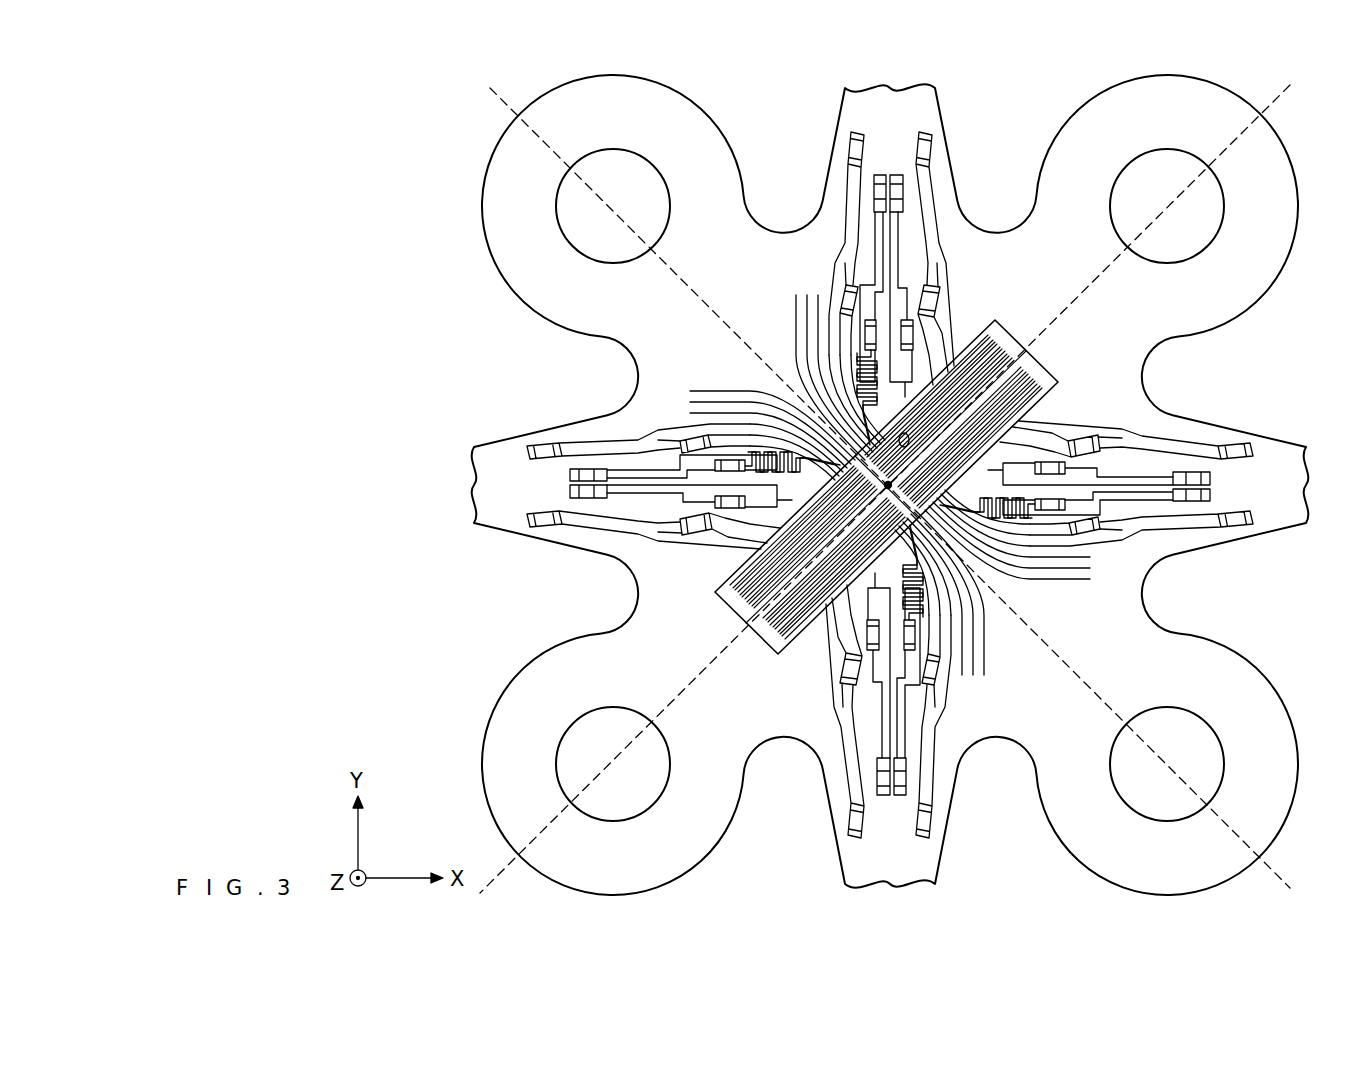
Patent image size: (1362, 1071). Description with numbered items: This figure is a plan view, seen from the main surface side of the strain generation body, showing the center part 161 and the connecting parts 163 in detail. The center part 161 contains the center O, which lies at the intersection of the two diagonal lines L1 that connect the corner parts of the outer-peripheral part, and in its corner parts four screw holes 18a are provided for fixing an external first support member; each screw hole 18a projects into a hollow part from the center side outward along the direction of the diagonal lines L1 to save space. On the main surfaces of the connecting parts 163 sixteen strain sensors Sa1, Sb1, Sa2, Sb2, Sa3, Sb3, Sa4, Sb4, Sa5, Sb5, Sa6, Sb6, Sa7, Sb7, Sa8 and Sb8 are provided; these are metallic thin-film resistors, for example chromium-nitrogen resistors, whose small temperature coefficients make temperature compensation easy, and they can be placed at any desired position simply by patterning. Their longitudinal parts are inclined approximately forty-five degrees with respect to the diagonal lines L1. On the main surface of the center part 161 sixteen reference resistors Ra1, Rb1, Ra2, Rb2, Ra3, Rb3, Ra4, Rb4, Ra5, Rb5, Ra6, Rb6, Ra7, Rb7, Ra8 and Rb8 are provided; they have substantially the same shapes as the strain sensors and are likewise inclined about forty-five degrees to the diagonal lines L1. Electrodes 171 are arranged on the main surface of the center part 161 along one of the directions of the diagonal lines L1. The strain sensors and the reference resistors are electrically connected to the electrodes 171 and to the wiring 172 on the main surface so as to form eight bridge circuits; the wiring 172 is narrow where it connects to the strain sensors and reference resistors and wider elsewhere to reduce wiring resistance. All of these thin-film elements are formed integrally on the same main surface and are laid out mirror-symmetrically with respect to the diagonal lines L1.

The center part 161 is at (1045, 297).
The connecting parts 163 is at (846, 108).
The electrodes 171 is at (720, 610).
The wiring 172 is at (1140, 432).
The screw hole 18a is at (572, 212).
The diagonal line L1 is at (1276, 104).
The strain sensor Sa1 is at (1250, 445).
The strain sensor Sa2 is at (1252, 527).
The strain sensor Sa3 is at (935, 822).
The strain sensor Sa4 is at (848, 820).
The strain sensor Sa5 is at (542, 525).
The strain sensor Sa6 is at (542, 450).
The strain sensor Sa7 is at (847, 150).
The strain sensor Sa8 is at (932, 140).
The strain sensor Sb1 is at (1212, 479).
The strain sensor Sb2 is at (1212, 497).
The strain sensor Sb3 is at (900, 798).
The strain sensor Sb4 is at (883, 798).
The strain sensor Sb5 is at (567, 492).
The strain sensor Sb6 is at (567, 480).
The strain sensor Sb7 is at (881, 174).
The strain sensor Sb8 is at (897, 174).
The reference resistor Ra1 is at (1088, 443).
The reference resistor Ra2 is at (1084, 536).
The reference resistor Ra3 is at (938, 668).
The reference resistor Ra4 is at (848, 672).
The reference resistor Ra5 is at (693, 530).
The reference resistor Ra6 is at (696, 436).
The reference resistor Ra7 is at (846, 300).
The reference resistor Ra8 is at (930, 305).
The reference resistor Rb1 is at (1052, 465).
The reference resistor Rb2 is at (1050, 512).
The reference resistor Rb3 is at (918, 635).
The reference resistor Rb4 is at (868, 632).
The reference resistor Rb5 is at (725, 513).
The reference resistor Rb6 is at (732, 462).
The reference resistor Rb7 is at (868, 338).
The reference resistor Rb8 is at (912, 338).